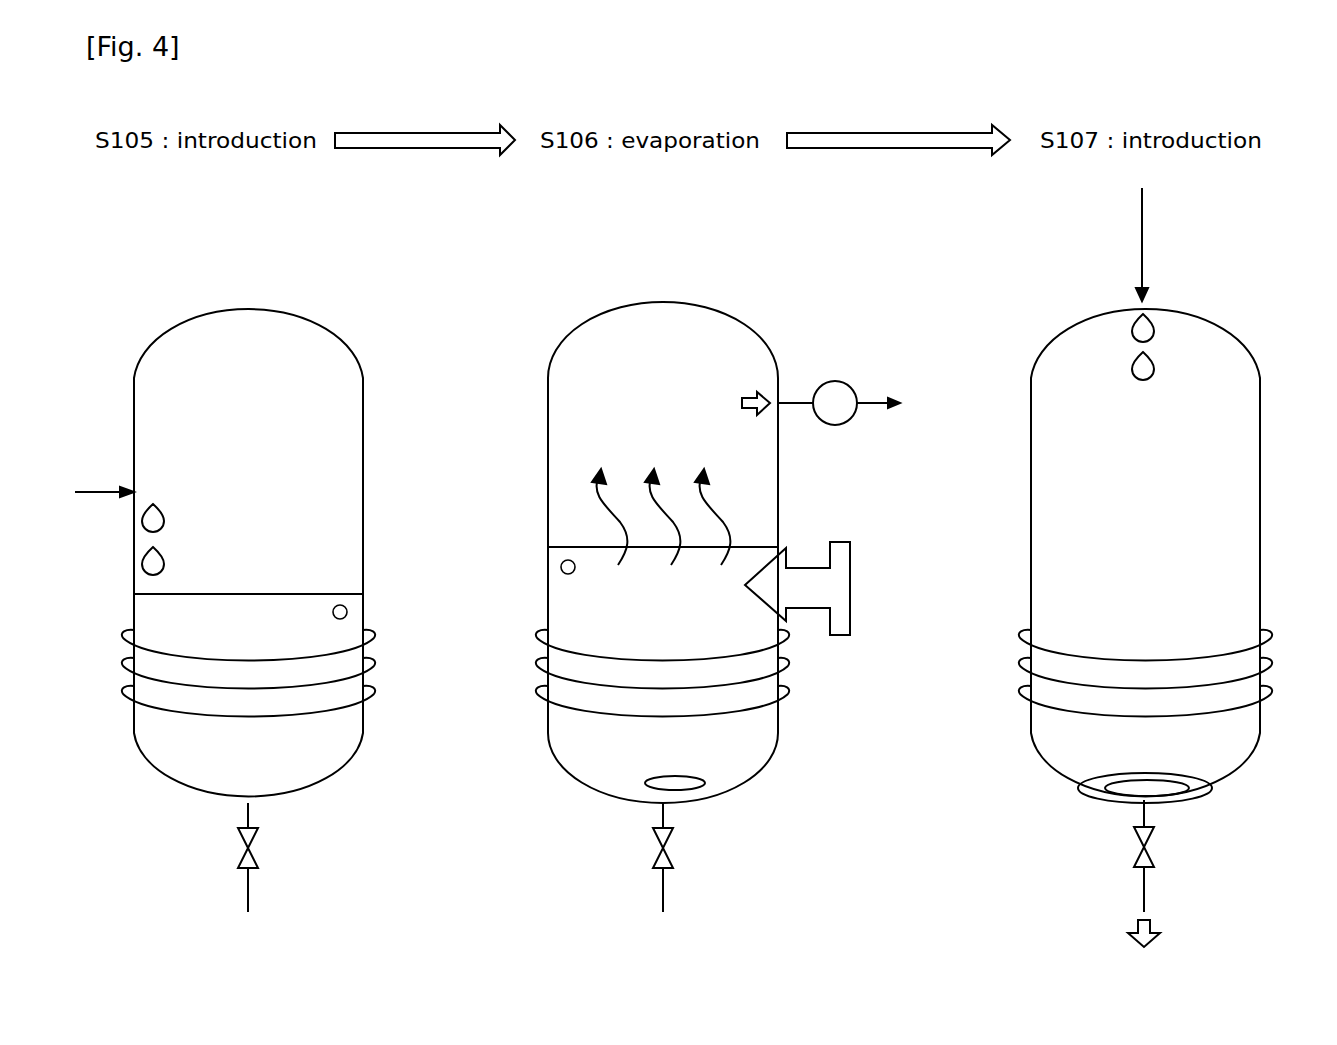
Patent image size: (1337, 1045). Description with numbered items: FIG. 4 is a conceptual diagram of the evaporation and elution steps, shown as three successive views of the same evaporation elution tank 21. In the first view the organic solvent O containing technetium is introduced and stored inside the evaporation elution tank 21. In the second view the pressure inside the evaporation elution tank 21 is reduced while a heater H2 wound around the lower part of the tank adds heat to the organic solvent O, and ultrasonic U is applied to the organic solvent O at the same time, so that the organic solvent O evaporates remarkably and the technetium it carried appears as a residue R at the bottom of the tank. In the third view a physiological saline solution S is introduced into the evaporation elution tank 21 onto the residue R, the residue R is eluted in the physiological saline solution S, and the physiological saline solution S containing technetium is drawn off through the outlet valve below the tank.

The evaporation elution tank 21 is at (348, 340).
The heater H2 is at (528, 633).
The organic solvent O is at (119, 531).
The ultrasonic U is at (797, 575).
The residue R is at (648, 788).
The physiological saline solution S is at (1233, 825).